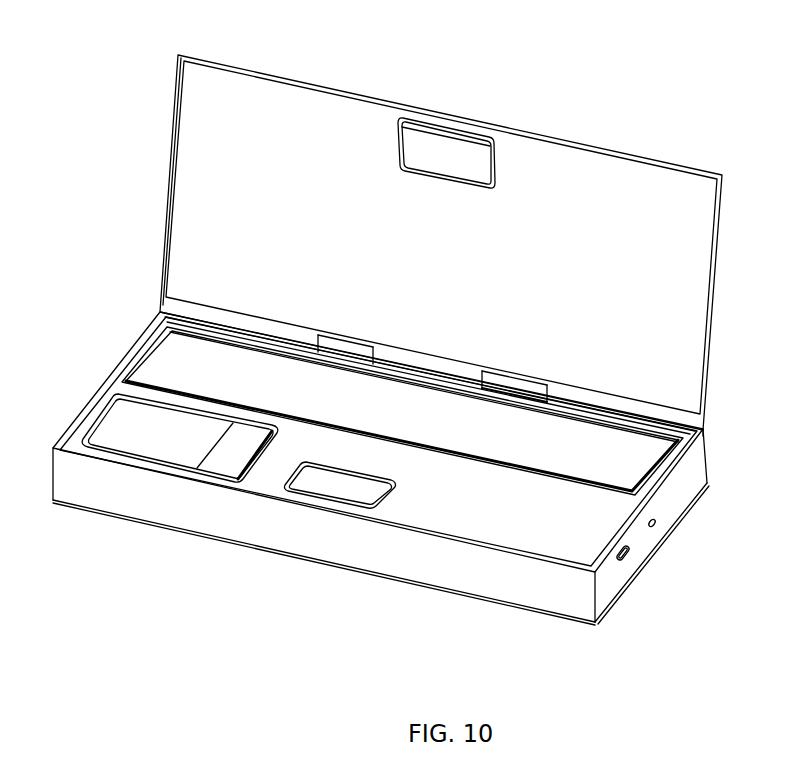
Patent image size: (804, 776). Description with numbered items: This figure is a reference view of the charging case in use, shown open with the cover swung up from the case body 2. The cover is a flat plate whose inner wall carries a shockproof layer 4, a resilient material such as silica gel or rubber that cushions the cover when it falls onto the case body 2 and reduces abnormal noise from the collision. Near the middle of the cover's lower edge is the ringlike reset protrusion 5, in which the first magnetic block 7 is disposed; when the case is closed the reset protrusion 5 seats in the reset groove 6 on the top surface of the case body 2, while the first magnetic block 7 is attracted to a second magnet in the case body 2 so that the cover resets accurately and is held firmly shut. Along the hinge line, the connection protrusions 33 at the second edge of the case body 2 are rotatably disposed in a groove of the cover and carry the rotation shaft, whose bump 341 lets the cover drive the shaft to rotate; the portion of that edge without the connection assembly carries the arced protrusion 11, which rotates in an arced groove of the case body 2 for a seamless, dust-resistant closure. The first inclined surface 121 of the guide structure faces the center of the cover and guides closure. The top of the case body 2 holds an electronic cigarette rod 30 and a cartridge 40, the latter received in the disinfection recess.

The case body 2 is at (685, 487).
The shockproof layer 4 is at (288, 122).
The reset protrusion 5 is at (406, 117).
The first magnetic block 7 is at (443, 148).
The arced protrusion 11 is at (705, 432).
The first inclined surface 121 is at (168, 228).
The electronic cigarette rod 30 is at (165, 360).
The connection protrusion 33 is at (548, 390).
The bump 341 is at (485, 372).
The cartridge 40 is at (128, 427).
The reset groove 6 is at (337, 492).